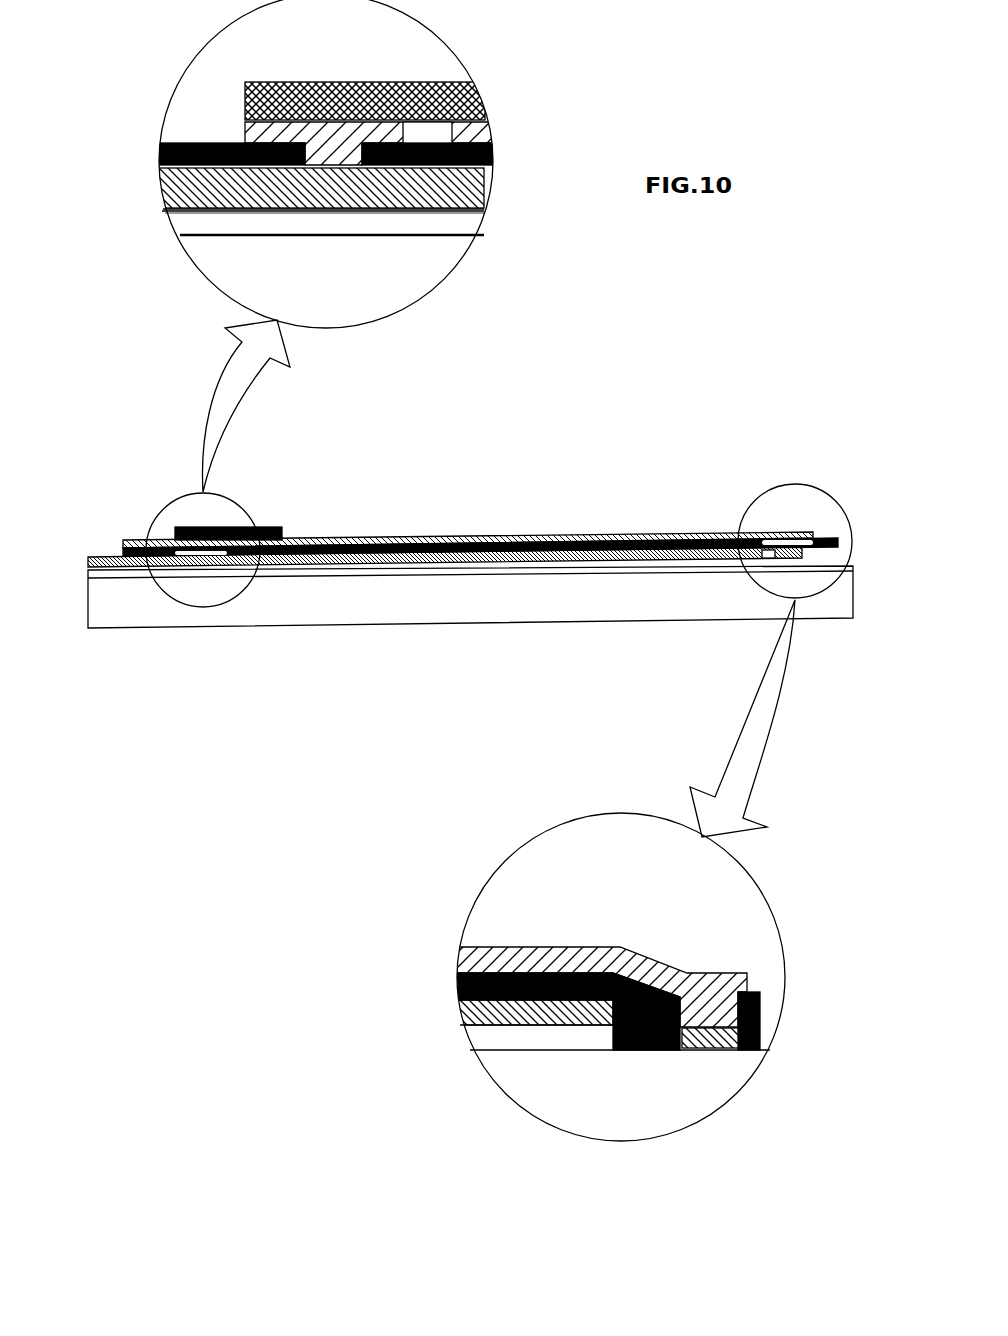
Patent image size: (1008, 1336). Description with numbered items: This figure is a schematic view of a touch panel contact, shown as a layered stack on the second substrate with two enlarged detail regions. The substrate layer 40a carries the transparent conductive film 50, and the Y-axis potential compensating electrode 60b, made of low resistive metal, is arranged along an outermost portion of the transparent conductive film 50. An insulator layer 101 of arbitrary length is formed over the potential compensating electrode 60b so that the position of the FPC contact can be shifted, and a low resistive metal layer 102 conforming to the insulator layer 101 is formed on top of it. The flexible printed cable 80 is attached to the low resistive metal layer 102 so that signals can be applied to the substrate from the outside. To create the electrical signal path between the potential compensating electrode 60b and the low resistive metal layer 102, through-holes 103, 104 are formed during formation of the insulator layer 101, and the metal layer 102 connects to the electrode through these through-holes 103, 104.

The substrate layer 40a is at (376, 308).
The transparent conductive film 50 is at (182, 220).
The Y-axis potential compensating electrode 60b is at (162, 186).
The flexible printed cable 80 is at (480, 100).
The insulator layer 101 is at (490, 155).
The low resistive metal layer 102 is at (250, 130).
The through-hole 103 is at (358, 213).
The through-hole 104 is at (760, 1035).